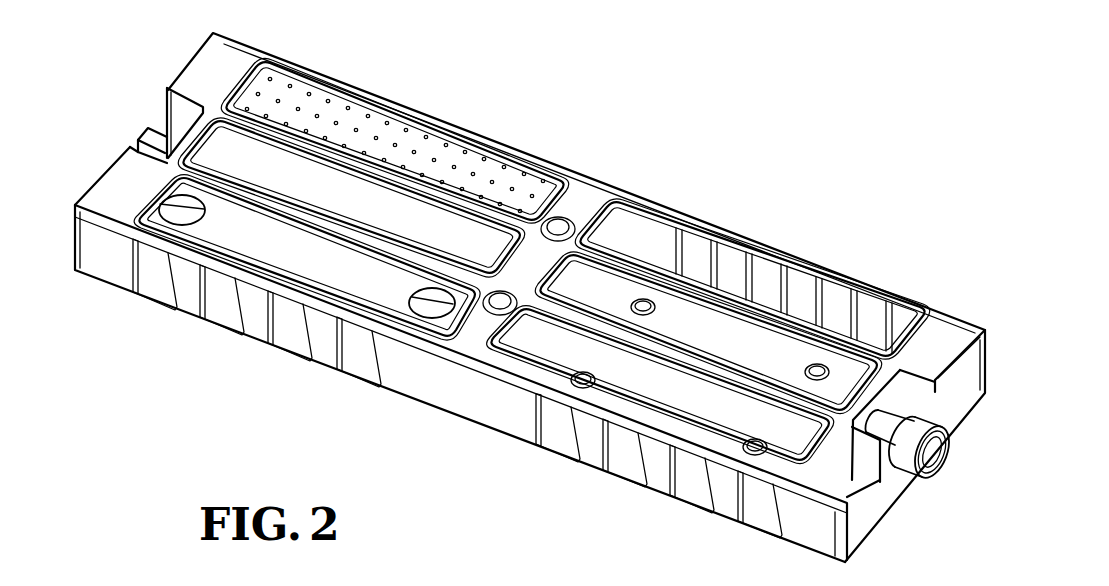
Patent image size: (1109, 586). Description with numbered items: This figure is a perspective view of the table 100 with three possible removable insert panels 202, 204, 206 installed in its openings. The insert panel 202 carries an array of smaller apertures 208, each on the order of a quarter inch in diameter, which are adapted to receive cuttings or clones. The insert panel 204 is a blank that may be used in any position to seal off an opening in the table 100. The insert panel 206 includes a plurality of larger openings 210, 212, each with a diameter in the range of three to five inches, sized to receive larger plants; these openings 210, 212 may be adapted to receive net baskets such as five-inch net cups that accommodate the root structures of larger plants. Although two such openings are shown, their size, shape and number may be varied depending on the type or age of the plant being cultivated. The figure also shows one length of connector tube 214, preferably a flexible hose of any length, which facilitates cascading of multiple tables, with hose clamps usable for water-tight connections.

The table 100 is at (850, 196).
The insert panel 202 is at (360, 118).
The insert panel 204 is at (393, 207).
The insert panel 206 is at (313, 270).
The smaller apertures 208 is at (543, 183).
The larger opening 210 is at (178, 213).
The larger opening 212 is at (436, 306).
The connector tube 214 is at (900, 476).